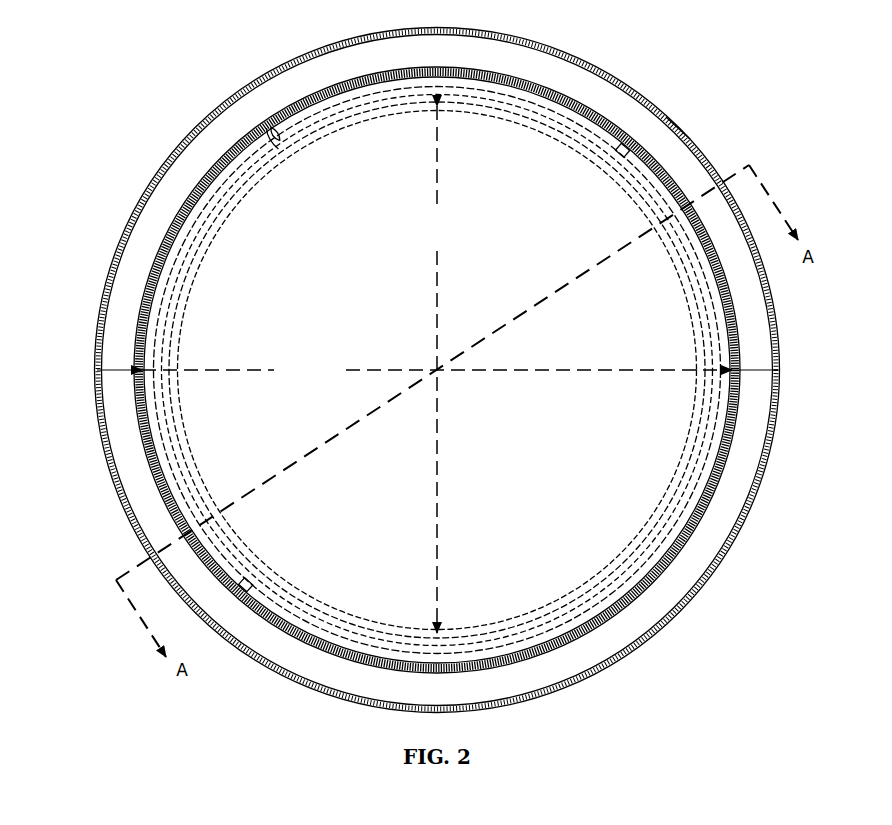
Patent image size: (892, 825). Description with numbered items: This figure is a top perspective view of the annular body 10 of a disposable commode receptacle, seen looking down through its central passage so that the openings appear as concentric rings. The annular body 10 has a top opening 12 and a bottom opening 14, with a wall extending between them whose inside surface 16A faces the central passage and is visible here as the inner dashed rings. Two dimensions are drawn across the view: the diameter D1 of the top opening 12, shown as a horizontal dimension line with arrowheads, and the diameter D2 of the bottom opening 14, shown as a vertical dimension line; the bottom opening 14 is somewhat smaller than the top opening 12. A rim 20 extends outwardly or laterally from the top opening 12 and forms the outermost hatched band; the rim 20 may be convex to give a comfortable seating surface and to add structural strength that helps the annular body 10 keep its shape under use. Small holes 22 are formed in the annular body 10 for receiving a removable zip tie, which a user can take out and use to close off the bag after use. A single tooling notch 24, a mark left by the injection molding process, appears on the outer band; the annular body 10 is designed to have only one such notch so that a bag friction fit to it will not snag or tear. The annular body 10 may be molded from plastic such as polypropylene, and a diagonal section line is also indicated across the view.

The annular body 10 is at (142, 159).
The top opening 12 is at (605, 106).
The bottom opening 14 is at (540, 114).
The inside surface 16A is at (278, 138).
The rim 20 is at (705, 542).
The holes 22 is at (258, 586).
The tooling notch 24 is at (687, 133).
The diameter of top opening D1 is at (437, 367).
The diameter of bottom opening D2 is at (436, 369).